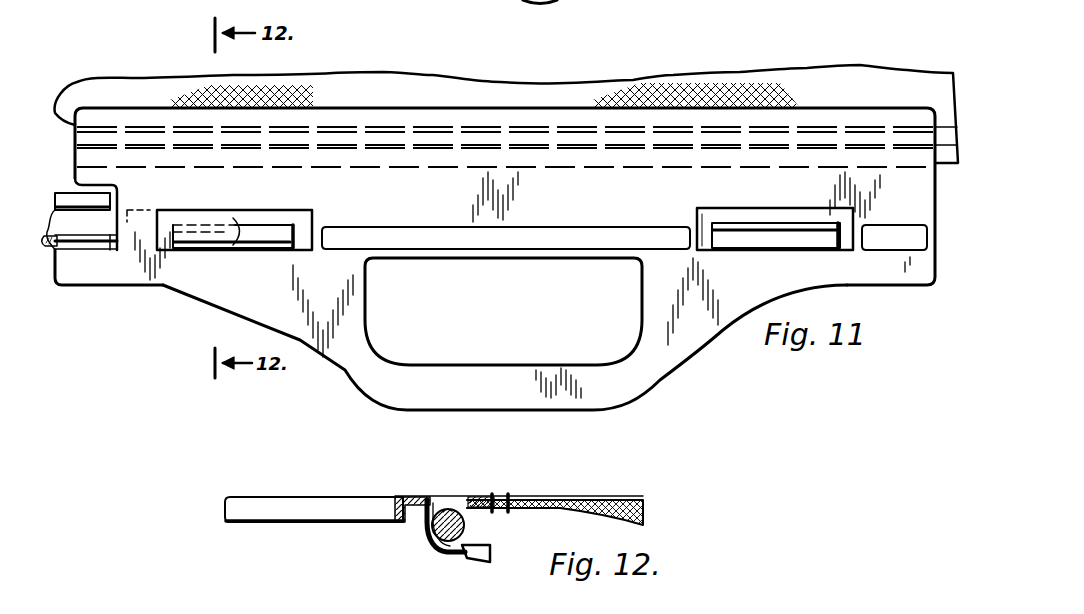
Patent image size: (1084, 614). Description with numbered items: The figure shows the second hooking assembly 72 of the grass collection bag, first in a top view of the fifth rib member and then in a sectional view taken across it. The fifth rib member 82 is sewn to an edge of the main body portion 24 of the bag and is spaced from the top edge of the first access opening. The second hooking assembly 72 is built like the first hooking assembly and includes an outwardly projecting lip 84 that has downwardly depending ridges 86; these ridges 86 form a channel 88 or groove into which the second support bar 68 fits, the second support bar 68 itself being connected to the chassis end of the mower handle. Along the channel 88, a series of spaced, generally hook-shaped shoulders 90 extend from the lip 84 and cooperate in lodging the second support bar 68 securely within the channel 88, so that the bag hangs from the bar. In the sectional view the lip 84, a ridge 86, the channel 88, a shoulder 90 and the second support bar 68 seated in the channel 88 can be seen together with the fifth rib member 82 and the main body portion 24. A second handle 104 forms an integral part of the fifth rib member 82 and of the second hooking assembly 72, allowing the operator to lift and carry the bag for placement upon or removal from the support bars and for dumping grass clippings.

In FIG. 11, the second hooking assembly 72 is at (143, 52).
In FIG. 12, the second hooking assembly 72 is at (598, 481).
In FIG. 11, the main body portion 24 is at (368, 82).
In FIG. 12, the main body portion 24 is at (632, 500).
In FIG. 11, the fifth rib member 82 is at (448, 130).
In FIG. 12, the fifth rib member 82 is at (473, 505).
In FIG. 11, the outwardly projecting lip 84 is at (905, 185).
In FIG. 12, the outwardly projecting lip 84 is at (437, 495).
In FIG. 12, the downwardly depending ridges 86 is at (463, 507).
In FIG. 11, the channel 88 is at (283, 242).
In FIG. 12, the channel 88 is at (470, 530).
In FIG. 11, the hook-shaped shoulders 90 is at (97, 193).
In FIG. 12, the hook-shaped shoulders 90 is at (447, 553).
In FIG. 11, the second support bar 68 is at (93, 228).
In FIG. 12, the second support bar 68 is at (440, 542).
In FIG. 11, the second handle 104 is at (637, 355).
In FIG. 12, the second handle 104 is at (298, 504).